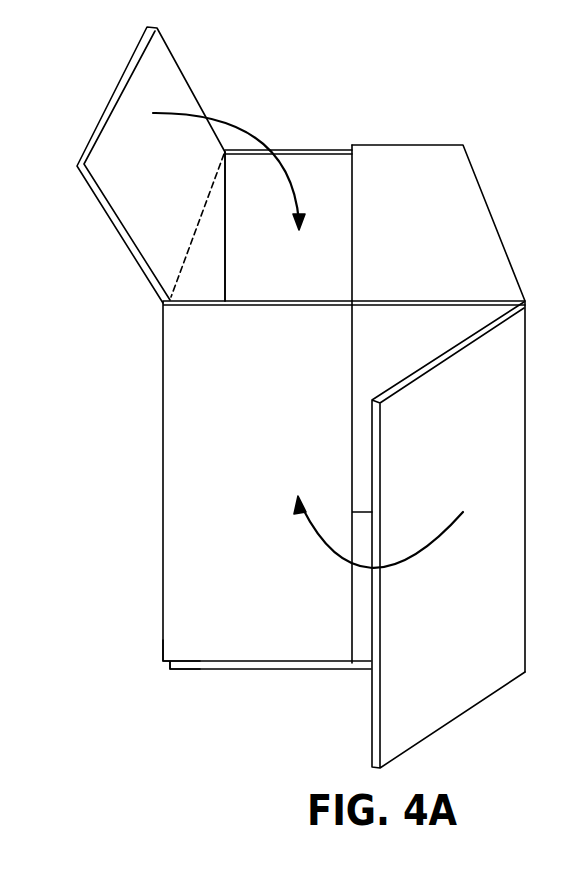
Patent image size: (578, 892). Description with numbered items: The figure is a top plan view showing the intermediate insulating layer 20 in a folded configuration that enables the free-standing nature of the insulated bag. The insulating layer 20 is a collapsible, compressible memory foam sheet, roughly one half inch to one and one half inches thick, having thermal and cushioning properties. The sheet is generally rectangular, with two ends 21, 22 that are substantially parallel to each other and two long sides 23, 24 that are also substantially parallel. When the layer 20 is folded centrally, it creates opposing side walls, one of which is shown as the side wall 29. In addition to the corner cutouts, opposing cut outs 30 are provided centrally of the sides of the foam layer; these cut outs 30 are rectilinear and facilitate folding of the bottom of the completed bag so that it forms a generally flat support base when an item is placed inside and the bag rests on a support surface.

The intermediate insulating layer 20 is at (251, 411).
The end 21 is at (116, 201).
The end 22 is at (470, 218).
The long side 23 is at (305, 164).
The long side 24 is at (451, 456).
The side wall 29 is at (213, 282).
The cut out 30 is at (172, 653).